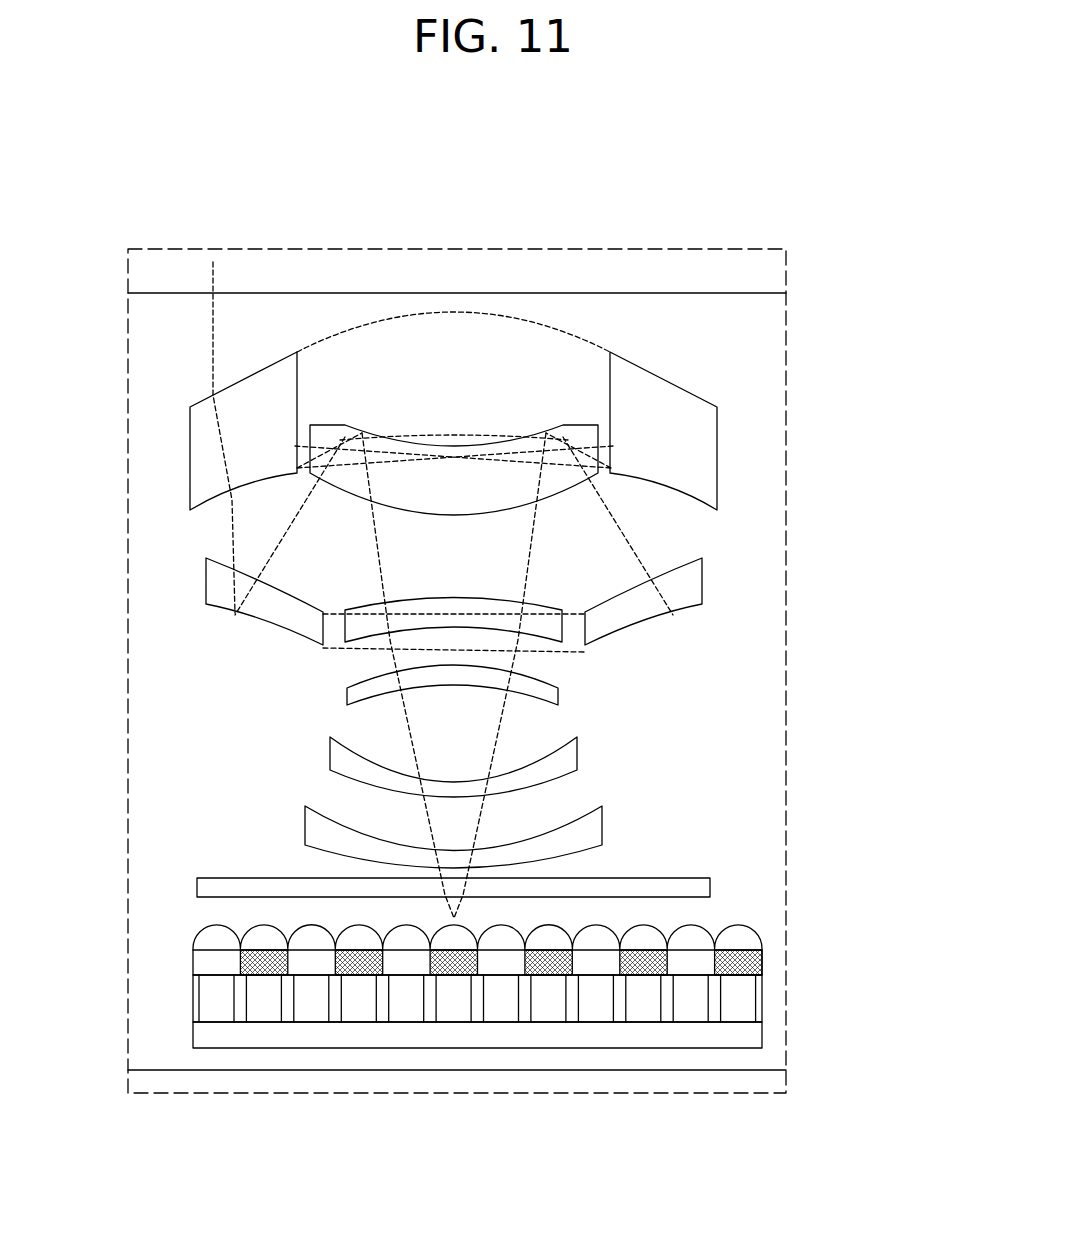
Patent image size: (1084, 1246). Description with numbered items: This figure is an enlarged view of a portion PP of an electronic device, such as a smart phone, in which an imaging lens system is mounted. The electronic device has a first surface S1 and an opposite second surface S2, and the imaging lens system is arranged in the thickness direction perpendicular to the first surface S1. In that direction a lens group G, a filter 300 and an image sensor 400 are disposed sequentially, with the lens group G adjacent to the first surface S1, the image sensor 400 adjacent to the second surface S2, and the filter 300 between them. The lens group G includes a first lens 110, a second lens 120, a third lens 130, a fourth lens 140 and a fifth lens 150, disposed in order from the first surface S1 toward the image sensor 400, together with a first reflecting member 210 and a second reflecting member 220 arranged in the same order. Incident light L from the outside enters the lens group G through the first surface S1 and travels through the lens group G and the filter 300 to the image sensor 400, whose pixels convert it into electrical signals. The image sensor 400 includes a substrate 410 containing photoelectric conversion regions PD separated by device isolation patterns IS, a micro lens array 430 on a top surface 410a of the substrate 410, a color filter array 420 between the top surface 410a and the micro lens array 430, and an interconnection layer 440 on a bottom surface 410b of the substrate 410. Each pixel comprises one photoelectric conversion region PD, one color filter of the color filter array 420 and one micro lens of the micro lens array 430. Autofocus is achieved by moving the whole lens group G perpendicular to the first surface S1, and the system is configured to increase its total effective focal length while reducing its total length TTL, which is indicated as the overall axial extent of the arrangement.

The first lens 110 is at (717, 447).
The first reflecting member 210 is at (598, 450).
The second reflecting member 220 is at (693, 590).
The second lens 120 is at (562, 628).
The third lens 130 is at (555, 694).
The fourth lens 140 is at (567, 758).
The fifth lens 150 is at (593, 830).
The lens group G is at (858, 440).
The filter 300 is at (710, 888).
The image sensor 400 is at (501, 988).
The substrate 410 is at (546, 1000).
The top surface of the substrate 410a is at (213, 971).
The bottom surface of the substrate 410b is at (213, 1024).
The color filter array 420 is at (763, 962).
The micro lens array 430 is at (757, 940).
The interconnection layer 440 is at (757, 1035).
The photoelectric conversion regions PD is at (750, 985).
The device isolation patterns IS is at (717, 1010).
The total length TTL is at (193, 922).
The portion PP is at (781, 182).
The first surface S1 is at (612, 291).
The second surface S2 is at (538, 1074).
The incident light L is at (672, 600).